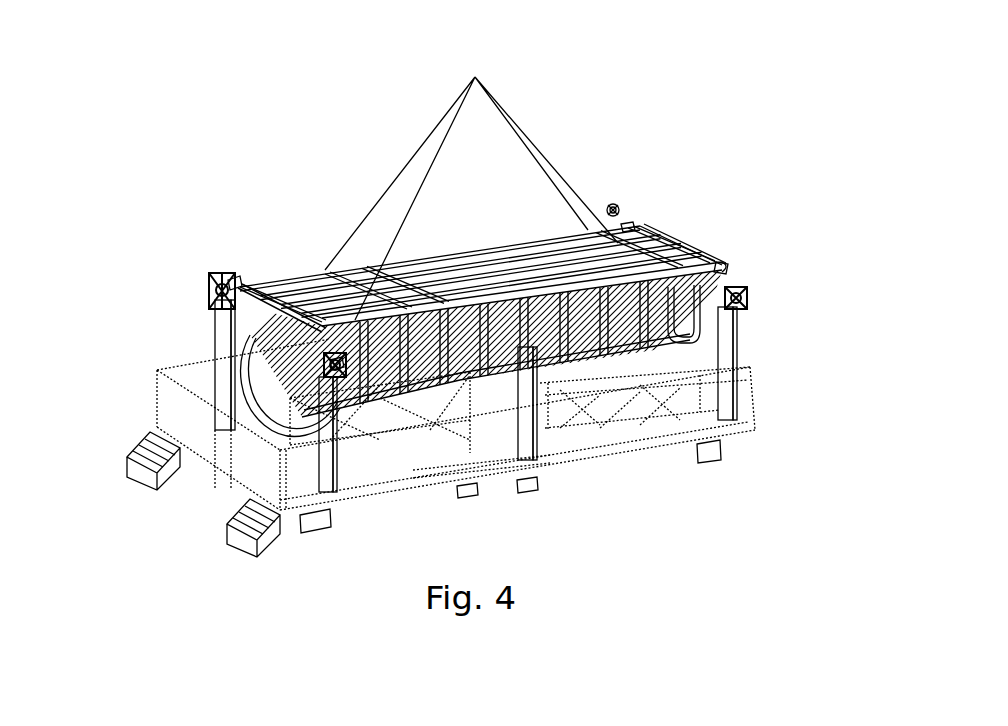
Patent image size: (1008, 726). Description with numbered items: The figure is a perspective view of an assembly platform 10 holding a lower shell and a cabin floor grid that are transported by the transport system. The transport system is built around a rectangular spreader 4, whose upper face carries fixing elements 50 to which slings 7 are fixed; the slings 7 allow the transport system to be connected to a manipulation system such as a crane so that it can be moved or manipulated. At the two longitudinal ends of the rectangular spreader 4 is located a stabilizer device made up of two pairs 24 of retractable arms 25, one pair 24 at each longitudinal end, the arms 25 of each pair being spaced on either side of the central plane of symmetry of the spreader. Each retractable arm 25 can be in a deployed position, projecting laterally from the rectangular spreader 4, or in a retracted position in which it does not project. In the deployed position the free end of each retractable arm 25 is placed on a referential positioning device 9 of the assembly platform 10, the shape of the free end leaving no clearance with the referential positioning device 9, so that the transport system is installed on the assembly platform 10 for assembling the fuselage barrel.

The rectangular spreader 4 is at (660, 228).
The slings 7 is at (530, 118).
The referential positioning devices 9 is at (208, 293).
The assembly platform 10 is at (764, 437).
The pairs of retractable arms 24 is at (705, 238).
The retractable arms 25 is at (229, 286).
The fixing elements 50 is at (325, 270).